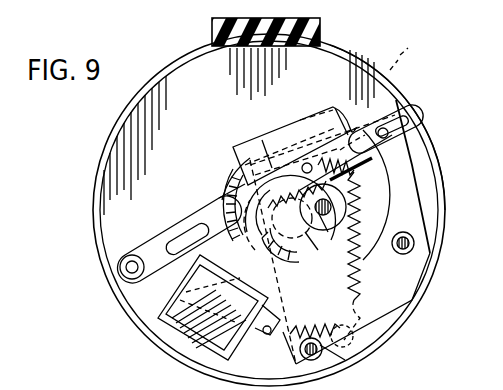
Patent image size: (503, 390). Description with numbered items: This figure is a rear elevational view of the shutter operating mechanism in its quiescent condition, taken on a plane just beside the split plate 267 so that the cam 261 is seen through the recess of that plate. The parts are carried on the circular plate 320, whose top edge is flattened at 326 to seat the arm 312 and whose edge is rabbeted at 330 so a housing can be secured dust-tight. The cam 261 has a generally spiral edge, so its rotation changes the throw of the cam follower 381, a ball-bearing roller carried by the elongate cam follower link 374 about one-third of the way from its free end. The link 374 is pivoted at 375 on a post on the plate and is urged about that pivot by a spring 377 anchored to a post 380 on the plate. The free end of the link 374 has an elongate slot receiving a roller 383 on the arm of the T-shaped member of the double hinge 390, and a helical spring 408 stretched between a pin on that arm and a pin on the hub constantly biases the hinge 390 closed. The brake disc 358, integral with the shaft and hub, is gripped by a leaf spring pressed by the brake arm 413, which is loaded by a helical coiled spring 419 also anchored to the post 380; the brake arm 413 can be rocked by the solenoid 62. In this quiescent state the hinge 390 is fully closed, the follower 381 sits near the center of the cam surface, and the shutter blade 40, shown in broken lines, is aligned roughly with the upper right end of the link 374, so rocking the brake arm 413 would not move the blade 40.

The arm 312 is at (322, 33).
The flattened top edge of plate 326 is at (346, 46).
The rabbeted edge of plate 330 is at (385, 80).
The circular plate 320 is at (182, 124).
The shutter blade 40 is at (386, 104).
The helical spring 408 is at (318, 108).
The roller 383 is at (416, 124).
The cam follower 381 is at (296, 160).
The double hinge 390 is at (230, 152).
The brake disc 358 is at (222, 196).
The brake arm 413 is at (292, 283).
The cam 261 is at (372, 228).
The split plate 267 is at (401, 296).
The post 380 is at (345, 326).
The cam follower link 374 is at (186, 233).
The pivot 375 is at (126, 269).
The solenoid 62 is at (230, 308).
The spring 377 is at (412, 302).
The helical coiled spring 419 is at (347, 360).